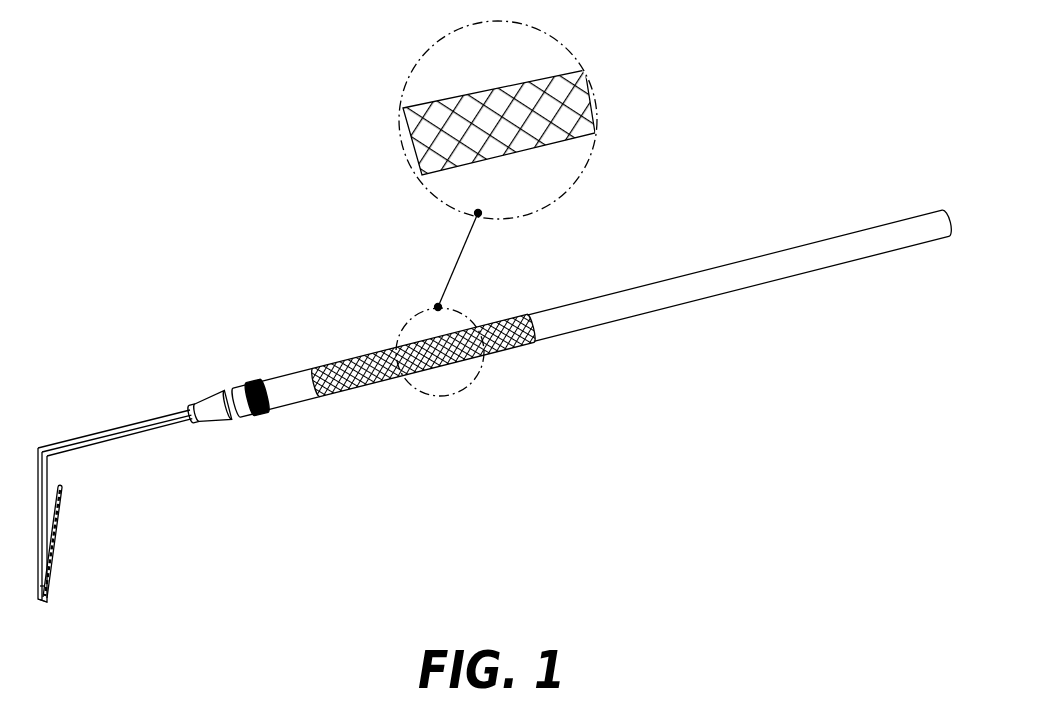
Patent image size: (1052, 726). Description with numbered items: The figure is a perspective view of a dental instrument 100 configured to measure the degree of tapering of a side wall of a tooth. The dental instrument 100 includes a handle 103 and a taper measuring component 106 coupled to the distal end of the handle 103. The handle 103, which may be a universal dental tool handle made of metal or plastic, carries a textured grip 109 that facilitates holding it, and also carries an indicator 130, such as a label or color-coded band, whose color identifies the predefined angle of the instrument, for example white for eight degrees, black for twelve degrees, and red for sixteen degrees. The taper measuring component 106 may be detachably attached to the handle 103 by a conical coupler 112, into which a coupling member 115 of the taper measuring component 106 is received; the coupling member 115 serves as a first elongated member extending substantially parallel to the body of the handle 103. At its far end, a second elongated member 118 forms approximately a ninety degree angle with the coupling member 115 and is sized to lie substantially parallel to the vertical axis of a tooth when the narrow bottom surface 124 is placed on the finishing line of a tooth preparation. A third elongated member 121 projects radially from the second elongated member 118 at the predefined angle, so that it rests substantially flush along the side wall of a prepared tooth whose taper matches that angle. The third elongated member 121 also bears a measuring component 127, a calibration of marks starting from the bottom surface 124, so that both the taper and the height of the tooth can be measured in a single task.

The dental instrument 100 is at (504, 337).
The handle 103 is at (613, 327).
The taper measuring component 106 is at (139, 551).
The textured grip 109 is at (548, 344).
The coupler 112 is at (197, 400).
The coupling member 115 is at (102, 427).
The second elongated member 118 is at (46, 474).
The third elongated member 121 is at (47, 588).
The bottom surface 124 is at (58, 616).
The measuring component 127 is at (78, 524).
The indicator 130 is at (250, 382).